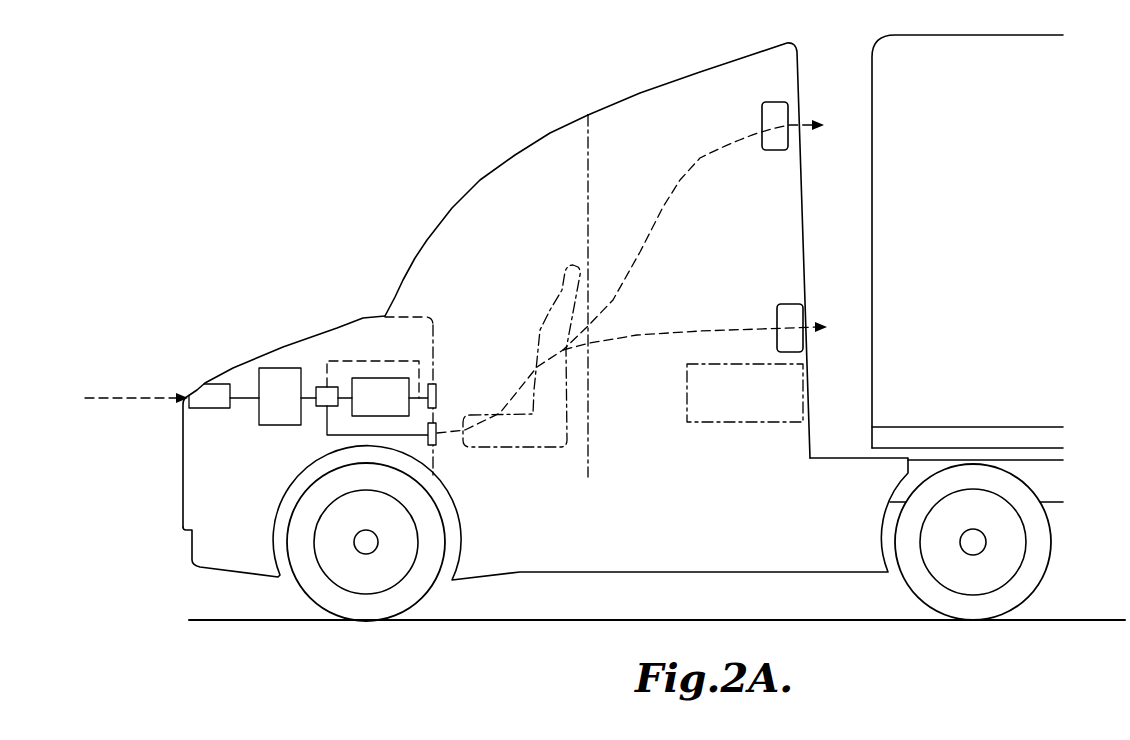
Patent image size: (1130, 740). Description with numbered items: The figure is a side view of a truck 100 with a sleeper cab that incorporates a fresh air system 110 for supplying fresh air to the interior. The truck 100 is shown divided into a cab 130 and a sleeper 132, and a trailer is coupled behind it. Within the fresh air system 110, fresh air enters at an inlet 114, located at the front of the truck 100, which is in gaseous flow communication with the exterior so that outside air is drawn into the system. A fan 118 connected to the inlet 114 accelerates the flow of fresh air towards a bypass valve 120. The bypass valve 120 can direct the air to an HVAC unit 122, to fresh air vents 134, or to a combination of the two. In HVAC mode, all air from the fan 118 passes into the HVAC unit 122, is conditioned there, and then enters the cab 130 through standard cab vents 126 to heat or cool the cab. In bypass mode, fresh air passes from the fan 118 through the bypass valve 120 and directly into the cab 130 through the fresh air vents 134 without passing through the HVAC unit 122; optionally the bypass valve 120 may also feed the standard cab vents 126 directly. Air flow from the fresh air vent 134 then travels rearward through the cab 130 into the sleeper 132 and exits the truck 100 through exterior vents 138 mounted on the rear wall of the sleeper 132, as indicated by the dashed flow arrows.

The truck 100 is at (433, 106).
The fresh air system 110 is at (349, 344).
The inlet 114 is at (212, 383).
The fan 118 is at (280, 368).
The bypass valve 120 is at (325, 387).
The HVAC unit 122 is at (380, 378).
The standard cab vents 126 is at (436, 388).
The cab 130 is at (494, 212).
The sleeper 132 is at (683, 90).
The fresh air vents 134 is at (437, 443).
The exterior vents 138 is at (788, 103).